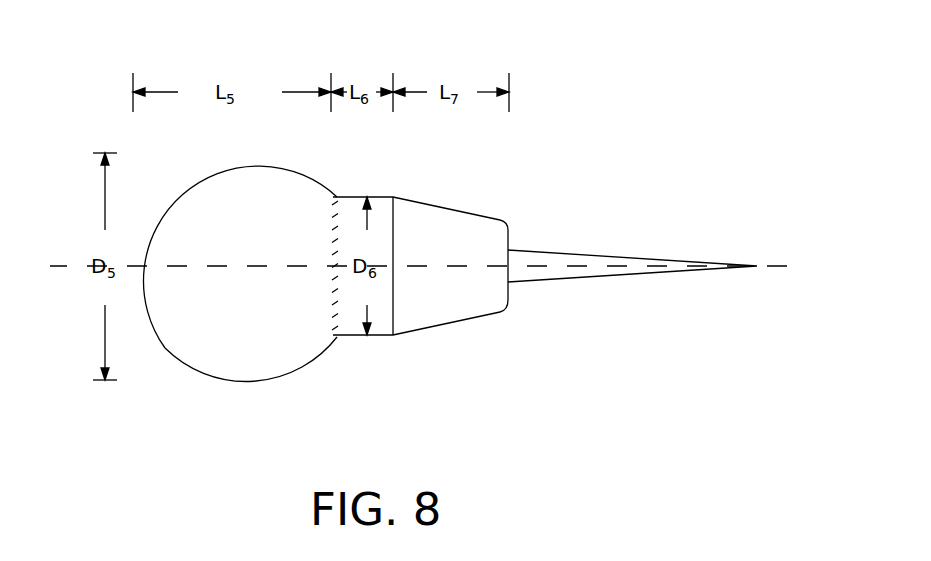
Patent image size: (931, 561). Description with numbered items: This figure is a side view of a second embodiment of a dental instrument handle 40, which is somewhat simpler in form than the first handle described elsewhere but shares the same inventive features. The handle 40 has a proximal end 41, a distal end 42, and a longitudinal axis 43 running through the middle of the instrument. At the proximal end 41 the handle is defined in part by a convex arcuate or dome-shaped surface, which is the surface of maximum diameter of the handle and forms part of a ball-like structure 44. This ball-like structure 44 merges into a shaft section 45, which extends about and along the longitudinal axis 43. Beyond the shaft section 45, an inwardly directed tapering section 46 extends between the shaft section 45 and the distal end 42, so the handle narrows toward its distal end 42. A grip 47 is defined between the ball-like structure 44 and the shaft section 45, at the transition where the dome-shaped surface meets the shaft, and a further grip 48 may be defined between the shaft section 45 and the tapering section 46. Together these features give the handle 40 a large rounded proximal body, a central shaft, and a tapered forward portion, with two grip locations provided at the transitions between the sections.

The handle 40 is at (166, 390).
The proximal end 41 is at (135, 293).
The distal end 42 is at (508, 297).
The longitudinal axis 43 is at (487, 265).
The ball-like structure 44 is at (233, 377).
The shaft section 45 is at (380, 336).
The tapering section 46 is at (452, 307).
The grip 47 is at (337, 197).
The further grip 48 is at (393, 197).